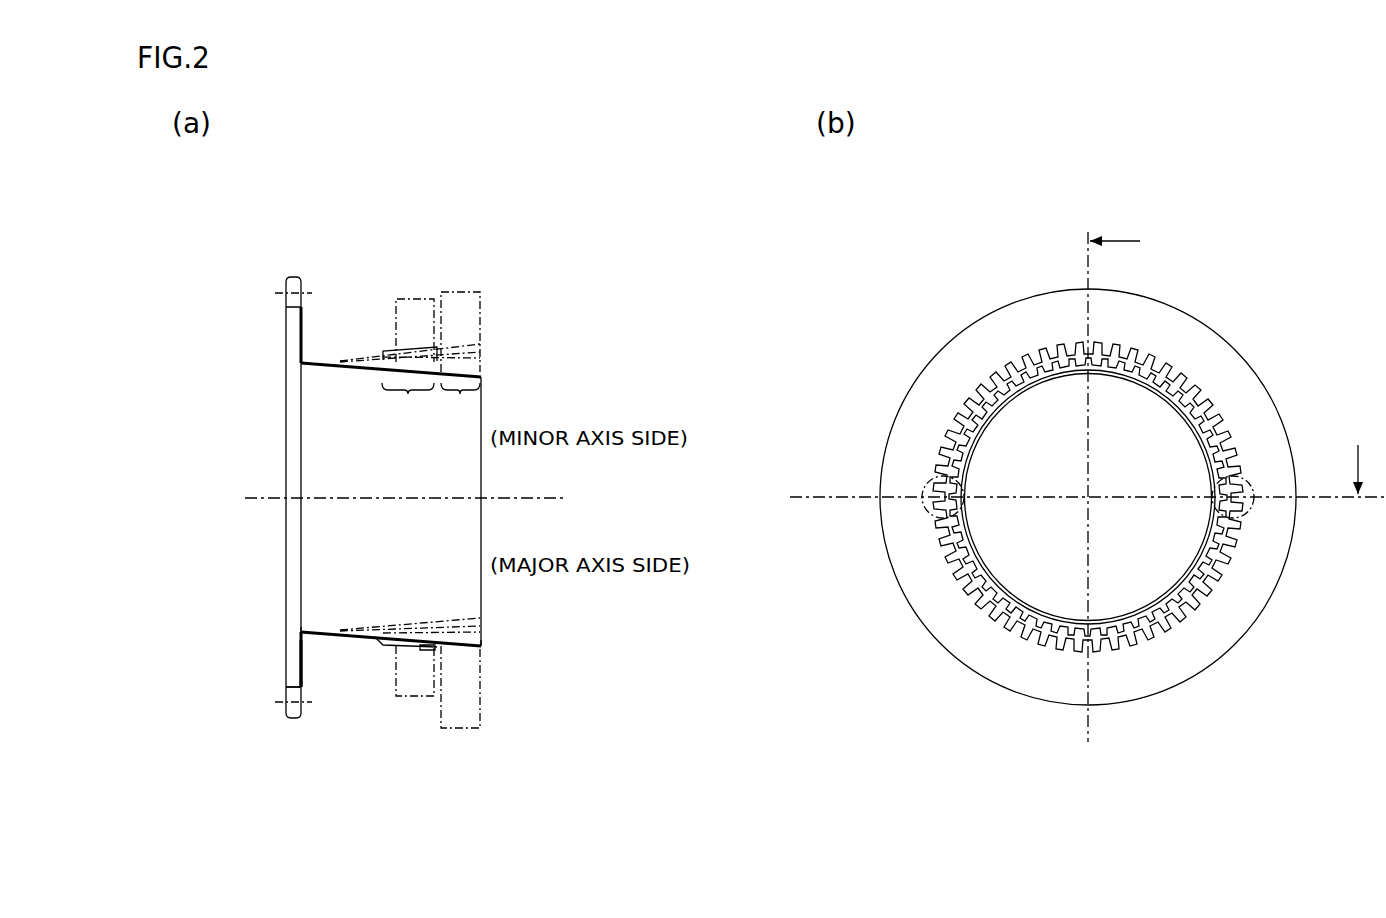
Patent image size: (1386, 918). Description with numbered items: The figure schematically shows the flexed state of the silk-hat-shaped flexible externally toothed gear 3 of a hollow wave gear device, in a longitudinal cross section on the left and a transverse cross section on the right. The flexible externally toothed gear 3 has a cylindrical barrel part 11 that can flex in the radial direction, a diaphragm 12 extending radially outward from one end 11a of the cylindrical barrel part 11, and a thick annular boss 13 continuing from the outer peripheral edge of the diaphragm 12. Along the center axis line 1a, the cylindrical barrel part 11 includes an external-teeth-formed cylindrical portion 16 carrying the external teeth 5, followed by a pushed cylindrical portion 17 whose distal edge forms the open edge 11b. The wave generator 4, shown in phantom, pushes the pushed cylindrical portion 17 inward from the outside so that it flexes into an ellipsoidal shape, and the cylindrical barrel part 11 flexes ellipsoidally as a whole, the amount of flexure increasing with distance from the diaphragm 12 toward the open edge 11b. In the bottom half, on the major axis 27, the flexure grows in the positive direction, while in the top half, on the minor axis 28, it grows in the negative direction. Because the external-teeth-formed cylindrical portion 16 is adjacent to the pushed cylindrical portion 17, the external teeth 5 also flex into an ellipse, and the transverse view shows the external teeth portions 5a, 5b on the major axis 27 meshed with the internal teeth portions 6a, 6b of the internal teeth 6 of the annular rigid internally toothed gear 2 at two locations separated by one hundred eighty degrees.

The center axis line 1a is at (267, 498).
The rigid internally toothed gear 2 is at (397, 297).
The flexible externally toothed gear 3 is at (283, 340).
The wave generator 4 is at (474, 291).
The external teeth 5 is at (405, 363).
The internal teeth 6 is at (405, 620).
The cylindrical barrel part 11 is at (337, 637).
The end of the cylindrical barrel part 11a is at (300, 631).
The open edge 11b is at (481, 644).
The diaphragm 12 is at (300, 664).
The boss 13 is at (286, 713).
The external-teeth-formed cylindrical portion 16 is at (408, 405).
The pushed cylindrical portion 17 is at (460, 405).
The major axis 27 is at (1333, 492).
The minor axis 28 is at (1088, 275).
The external teeth portion 5a is at (1292, 516).
The internal teeth portion 6a is at (1259, 511).
The external teeth portion 5b is at (878, 519).
The internal teeth portion 6b is at (917, 504).